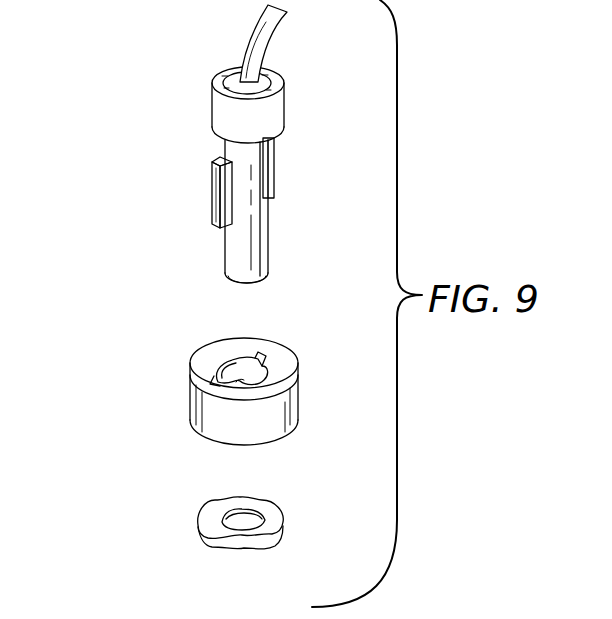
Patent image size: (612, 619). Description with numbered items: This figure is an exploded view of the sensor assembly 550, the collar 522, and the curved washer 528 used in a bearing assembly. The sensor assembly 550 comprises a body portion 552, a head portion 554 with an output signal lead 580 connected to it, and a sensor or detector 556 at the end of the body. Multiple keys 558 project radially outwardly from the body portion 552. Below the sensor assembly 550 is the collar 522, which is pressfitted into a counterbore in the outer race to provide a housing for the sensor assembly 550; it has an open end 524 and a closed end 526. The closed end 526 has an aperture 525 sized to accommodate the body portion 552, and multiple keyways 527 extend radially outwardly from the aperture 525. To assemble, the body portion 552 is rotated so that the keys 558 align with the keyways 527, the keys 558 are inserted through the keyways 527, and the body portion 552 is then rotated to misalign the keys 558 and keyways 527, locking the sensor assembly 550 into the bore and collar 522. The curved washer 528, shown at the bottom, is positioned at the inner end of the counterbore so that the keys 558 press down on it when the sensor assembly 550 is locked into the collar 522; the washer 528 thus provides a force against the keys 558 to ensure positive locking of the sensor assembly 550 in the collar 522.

The sensor assembly 550 is at (146, 50).
The output signal lead 580 is at (255, 34).
The head portion 554 is at (215, 125).
The keys 558 is at (210, 166).
The body portion 552 is at (233, 253).
The sensor or detector 556 is at (262, 279).
The collar 522 is at (116, 368).
The open end 524 is at (262, 444).
The closed end 526 is at (297, 400).
The aperture 525 is at (207, 393).
The keyways 527 is at (220, 382).
The curved washer 528 is at (283, 520).